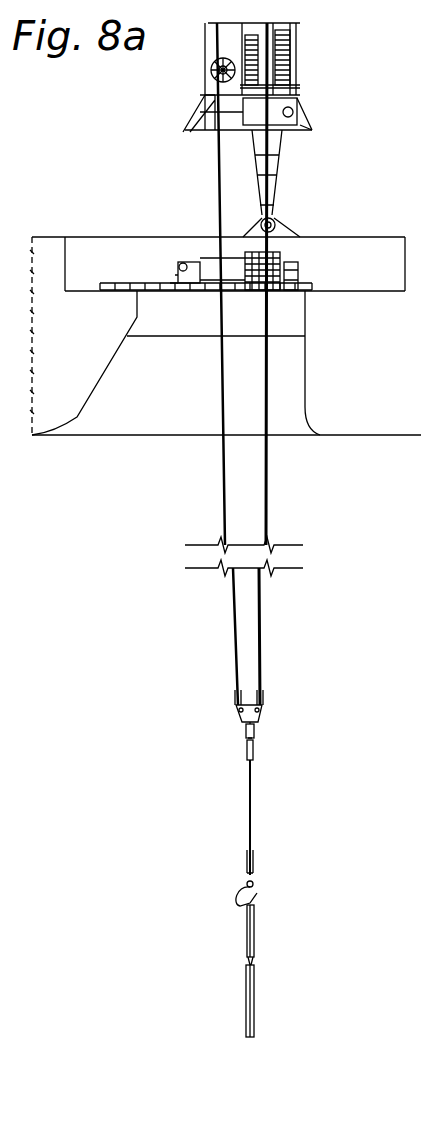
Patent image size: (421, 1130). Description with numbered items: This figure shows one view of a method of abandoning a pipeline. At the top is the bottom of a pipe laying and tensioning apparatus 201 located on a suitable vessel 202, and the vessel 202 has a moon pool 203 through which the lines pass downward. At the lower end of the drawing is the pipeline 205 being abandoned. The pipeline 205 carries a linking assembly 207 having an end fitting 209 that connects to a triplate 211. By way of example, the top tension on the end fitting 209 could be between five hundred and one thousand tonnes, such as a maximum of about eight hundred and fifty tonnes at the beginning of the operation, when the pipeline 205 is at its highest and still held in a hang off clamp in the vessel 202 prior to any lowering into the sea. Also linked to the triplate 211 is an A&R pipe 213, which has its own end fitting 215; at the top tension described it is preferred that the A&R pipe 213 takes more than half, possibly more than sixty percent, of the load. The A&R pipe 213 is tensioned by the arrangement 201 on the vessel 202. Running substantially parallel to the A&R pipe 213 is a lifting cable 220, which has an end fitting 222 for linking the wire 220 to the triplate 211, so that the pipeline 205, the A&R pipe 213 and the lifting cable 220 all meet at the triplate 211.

The pipe laying and tensioning apparatus 201 is at (293, 58).
The vessel 202 is at (148, 237).
The moon pool 203 is at (187, 336).
The lifting cable 220 is at (234, 635).
The A&R pipe 213 is at (258, 617).
The end fitting 222 is at (237, 700).
The end fitting 215 is at (263, 702).
The triplate 211 is at (242, 727).
The end fitting 209 is at (252, 738).
The linking assembly 207 is at (250, 808).
The pipeline 205 is at (250, 1012).